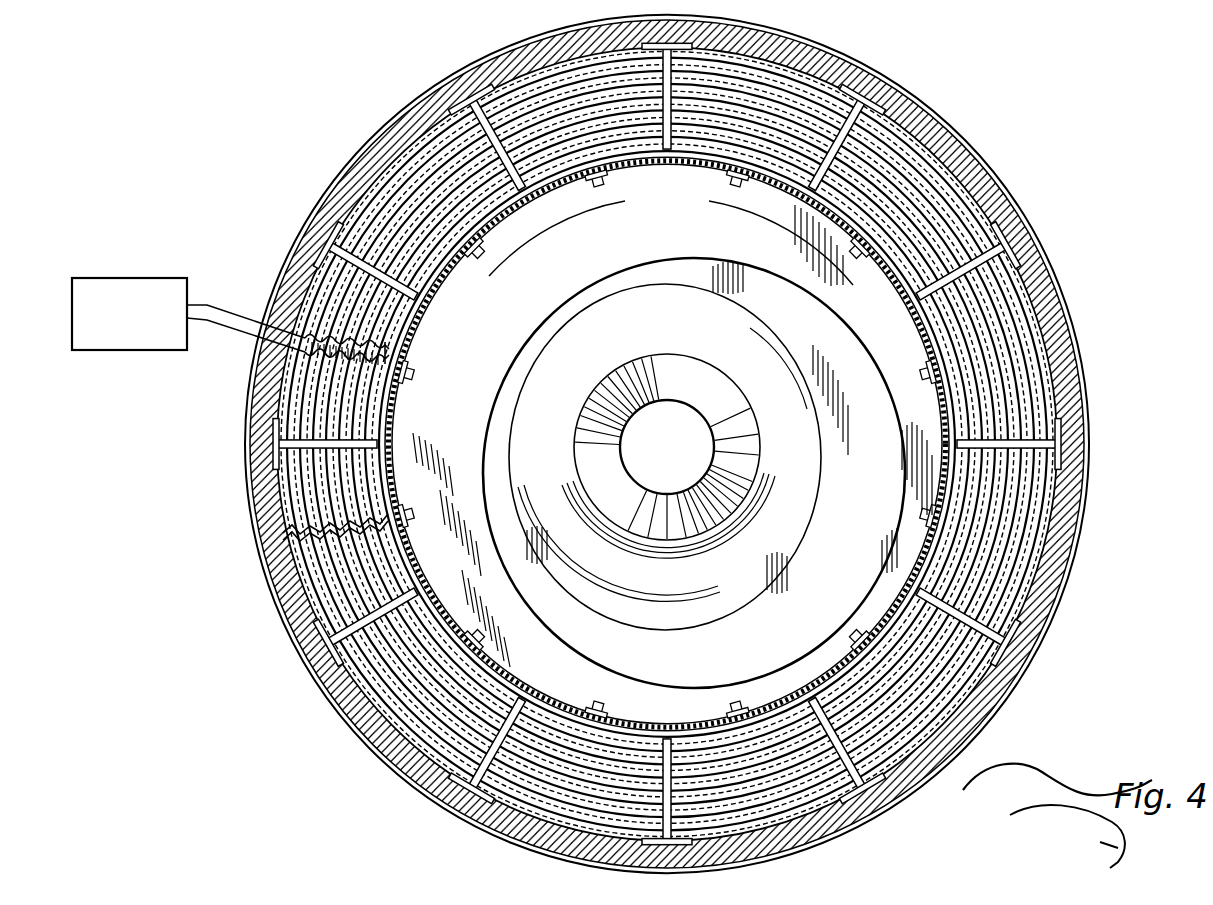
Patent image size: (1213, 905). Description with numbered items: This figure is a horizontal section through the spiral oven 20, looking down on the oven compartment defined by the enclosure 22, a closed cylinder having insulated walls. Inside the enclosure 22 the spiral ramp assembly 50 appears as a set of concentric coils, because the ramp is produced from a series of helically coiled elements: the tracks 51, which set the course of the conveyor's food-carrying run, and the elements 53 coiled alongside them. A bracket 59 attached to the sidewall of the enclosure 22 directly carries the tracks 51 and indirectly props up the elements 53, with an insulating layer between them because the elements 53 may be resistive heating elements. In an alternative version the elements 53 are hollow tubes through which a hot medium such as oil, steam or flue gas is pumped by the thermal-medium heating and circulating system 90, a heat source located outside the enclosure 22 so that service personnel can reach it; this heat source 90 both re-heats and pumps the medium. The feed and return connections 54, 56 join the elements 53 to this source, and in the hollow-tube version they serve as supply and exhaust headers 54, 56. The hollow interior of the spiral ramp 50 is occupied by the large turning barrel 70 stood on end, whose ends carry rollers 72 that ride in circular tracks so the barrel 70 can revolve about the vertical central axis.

The oven 20 is at (317, 72).
The enclosure 22 is at (524, 48).
The spiral ramp assembly 50 is at (667, 443).
The tracks 51 is at (898, 170).
The elements 53 is at (1001, 337).
The feed connection 54 is at (237, 297).
The return connection 56 is at (227, 328).
The bracket 59 is at (676, 787).
The barrel 70 is at (645, 168).
The rollers 72 is at (448, 282).
The thermal-medium heating and circulating system 90 is at (151, 276).